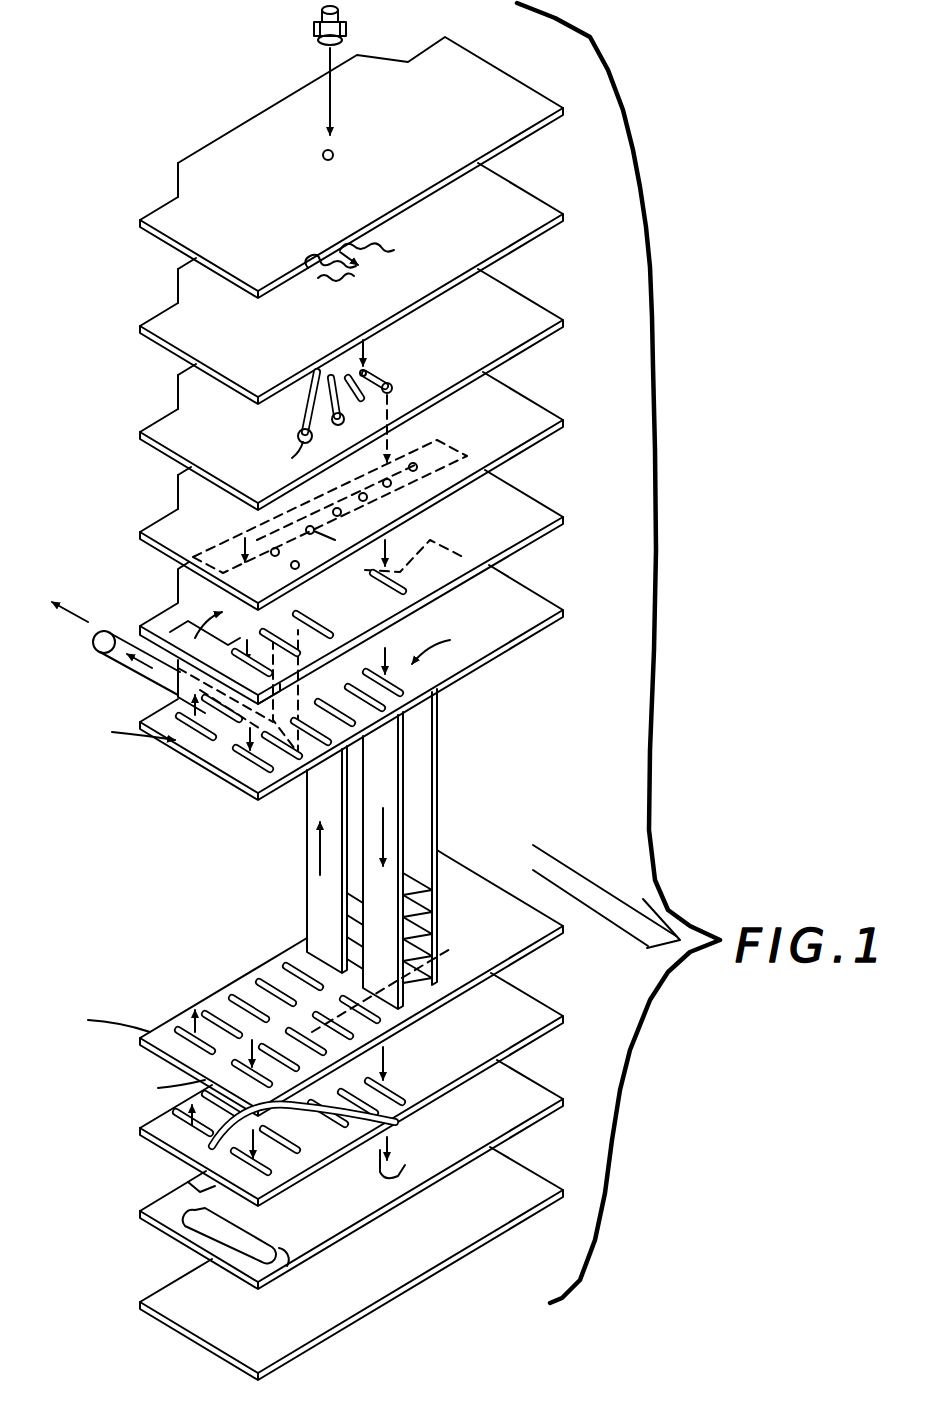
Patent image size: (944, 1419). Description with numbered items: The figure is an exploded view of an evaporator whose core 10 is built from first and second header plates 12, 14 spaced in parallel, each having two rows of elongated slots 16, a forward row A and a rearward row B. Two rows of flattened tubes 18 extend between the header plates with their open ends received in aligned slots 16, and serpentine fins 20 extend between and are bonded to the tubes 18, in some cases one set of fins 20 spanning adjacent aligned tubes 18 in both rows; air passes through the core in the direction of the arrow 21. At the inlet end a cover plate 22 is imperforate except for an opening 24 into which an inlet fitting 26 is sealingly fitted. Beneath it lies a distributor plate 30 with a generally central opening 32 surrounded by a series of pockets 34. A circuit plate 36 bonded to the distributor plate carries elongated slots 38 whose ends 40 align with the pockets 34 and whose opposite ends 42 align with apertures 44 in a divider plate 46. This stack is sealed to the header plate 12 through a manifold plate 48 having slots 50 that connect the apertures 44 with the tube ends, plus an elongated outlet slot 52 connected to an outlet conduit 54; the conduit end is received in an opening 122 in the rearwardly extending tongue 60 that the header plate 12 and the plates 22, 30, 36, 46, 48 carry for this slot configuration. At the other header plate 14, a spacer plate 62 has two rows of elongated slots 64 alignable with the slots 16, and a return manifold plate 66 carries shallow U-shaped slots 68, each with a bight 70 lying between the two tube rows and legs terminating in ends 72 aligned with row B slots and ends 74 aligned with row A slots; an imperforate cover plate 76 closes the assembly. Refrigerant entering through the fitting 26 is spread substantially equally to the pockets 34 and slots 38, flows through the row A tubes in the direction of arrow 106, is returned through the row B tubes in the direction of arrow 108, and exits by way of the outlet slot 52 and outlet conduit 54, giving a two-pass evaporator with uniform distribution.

The core 10 is at (195, 866).
The first header plate 12 is at (172, 750).
The second header plate 14 is at (142, 1050).
The elongated slots 16 is at (245, 772).
The flattened tubes 18 is at (392, 777).
The serpentine fins 20 is at (428, 904).
The arrow 21 is at (610, 913).
The cover plate 22 is at (496, 76).
The opening 24 is at (338, 156).
The inlet fitting 26 is at (348, 25).
The distributor plate 30 is at (522, 205).
The central opening 32 is at (330, 282).
The pockets 34 is at (380, 256).
The circuit plate 36 is at (528, 312).
The elongated slots 38 is at (392, 378).
The ends 40 is at (372, 368).
The opposite ends 42 is at (303, 442).
The apertures 44 is at (403, 458).
The divider plate 46 is at (528, 420).
The manifold plate 48 is at (530, 498).
The slots 50 is at (328, 624).
The elongated outlet slot 52 is at (200, 612).
The outlet conduit 54 is at (102, 654).
The tongue 60 is at (215, 137).
The spacer plate 62 is at (542, 1025).
The elongated slots 64 is at (398, 1120).
The return manifold plate 66 is at (533, 1104).
The U-shaped slots 68 is at (283, 1206).
The bight 70 is at (265, 1193).
The ends 72 is at (192, 1186).
The ends 74 is at (288, 1268).
The imperforate cover plate 76 is at (534, 1190).
The arrow 106 is at (396, 806).
The arrow 108 is at (310, 850).
The opening 122 is at (200, 1160).